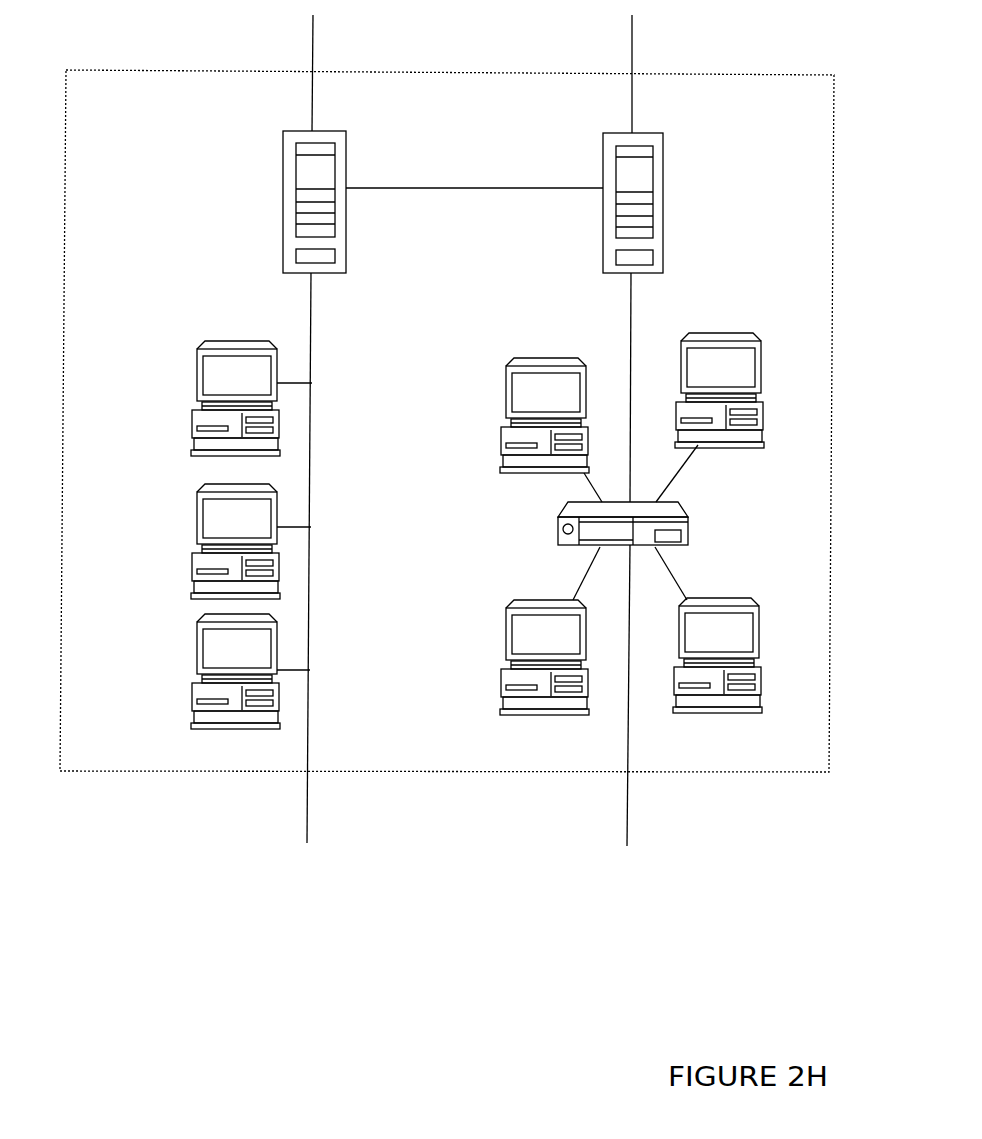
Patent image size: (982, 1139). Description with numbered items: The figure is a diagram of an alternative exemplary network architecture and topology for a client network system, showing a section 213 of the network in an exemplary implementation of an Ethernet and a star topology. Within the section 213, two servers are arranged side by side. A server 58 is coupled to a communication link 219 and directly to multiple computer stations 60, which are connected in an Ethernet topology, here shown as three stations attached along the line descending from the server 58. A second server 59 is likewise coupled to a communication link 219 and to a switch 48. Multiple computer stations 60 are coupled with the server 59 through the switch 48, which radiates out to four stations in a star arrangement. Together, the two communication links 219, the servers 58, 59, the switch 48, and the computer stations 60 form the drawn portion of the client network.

The section 213 is at (110, 70).
The communication link 219 is at (313, 43).
The server 58 is at (314, 202).
The server 59 is at (633, 203).
The switch 48 is at (628, 522).
The computer station 60 is at (477, 531).